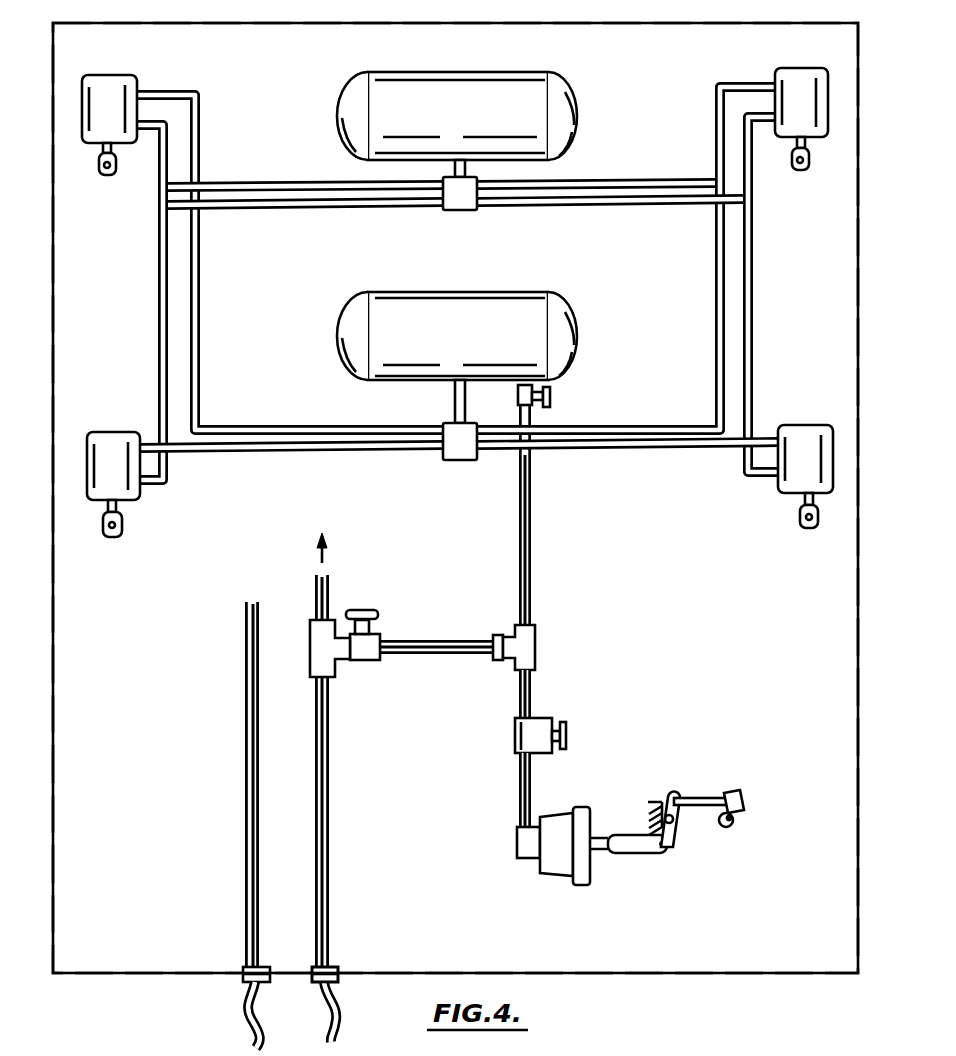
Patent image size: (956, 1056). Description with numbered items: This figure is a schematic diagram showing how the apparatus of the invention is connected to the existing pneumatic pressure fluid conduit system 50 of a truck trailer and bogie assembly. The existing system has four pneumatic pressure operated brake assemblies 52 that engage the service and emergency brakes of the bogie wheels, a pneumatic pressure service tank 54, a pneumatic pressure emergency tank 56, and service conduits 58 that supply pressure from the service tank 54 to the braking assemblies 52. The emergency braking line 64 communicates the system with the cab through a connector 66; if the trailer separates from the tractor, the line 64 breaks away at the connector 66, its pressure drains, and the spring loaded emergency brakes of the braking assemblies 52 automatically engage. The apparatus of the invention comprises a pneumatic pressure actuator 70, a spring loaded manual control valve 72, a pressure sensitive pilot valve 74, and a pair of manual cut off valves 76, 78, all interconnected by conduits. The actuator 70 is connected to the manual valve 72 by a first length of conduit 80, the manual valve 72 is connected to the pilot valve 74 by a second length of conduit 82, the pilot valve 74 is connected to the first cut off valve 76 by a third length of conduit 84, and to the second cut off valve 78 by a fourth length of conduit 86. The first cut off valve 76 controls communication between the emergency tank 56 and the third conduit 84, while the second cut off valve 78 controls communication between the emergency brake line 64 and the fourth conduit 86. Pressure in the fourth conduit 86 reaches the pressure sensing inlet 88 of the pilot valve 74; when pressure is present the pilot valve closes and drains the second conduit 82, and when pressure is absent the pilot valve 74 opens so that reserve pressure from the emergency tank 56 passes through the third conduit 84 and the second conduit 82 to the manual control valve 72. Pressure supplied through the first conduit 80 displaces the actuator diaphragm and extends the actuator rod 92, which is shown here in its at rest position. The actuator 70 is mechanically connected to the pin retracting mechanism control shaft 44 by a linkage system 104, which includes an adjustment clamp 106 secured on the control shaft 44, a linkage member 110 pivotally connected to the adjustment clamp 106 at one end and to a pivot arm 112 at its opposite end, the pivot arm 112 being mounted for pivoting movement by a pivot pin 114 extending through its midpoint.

The pneumatic pressure fluid conduit system 50 is at (577, 65).
The pneumatic pressure operated brake assembly 52 is at (117, 83).
The pneumatic pressure service tank 54 is at (427, 88).
The pneumatic pressure emergency tank 56 is at (398, 302).
The service conduit 58 is at (157, 172).
The emergency braking line 64 is at (197, 132).
The connector 66 is at (338, 965).
The pneumatic pressure actuator 70 is at (560, 860).
The spring loaded manual control valve 72 is at (515, 742).
The pressure sensitive pilot valve 74 is at (537, 650).
The first manual cut off valve 76 is at (551, 397).
The second manual cut off valve 78 is at (360, 612).
The first length of conduit 80 is at (520, 790).
The second length of conduit 82 is at (520, 690).
The third length of conduit 84 is at (532, 528).
The fourth length of conduit 86 is at (428, 640).
The pressure sensing inlet 88 is at (490, 655).
The actuator rod 92 is at (598, 848).
The linkage system 104 is at (690, 766).
The adjustment clamp 106 is at (744, 803).
The linkage member 110 is at (705, 797).
The pivot arm 112 is at (664, 796).
The pivot pin 114 is at (678, 824).
The pin retracting mechanism control shaft 44 is at (727, 830).